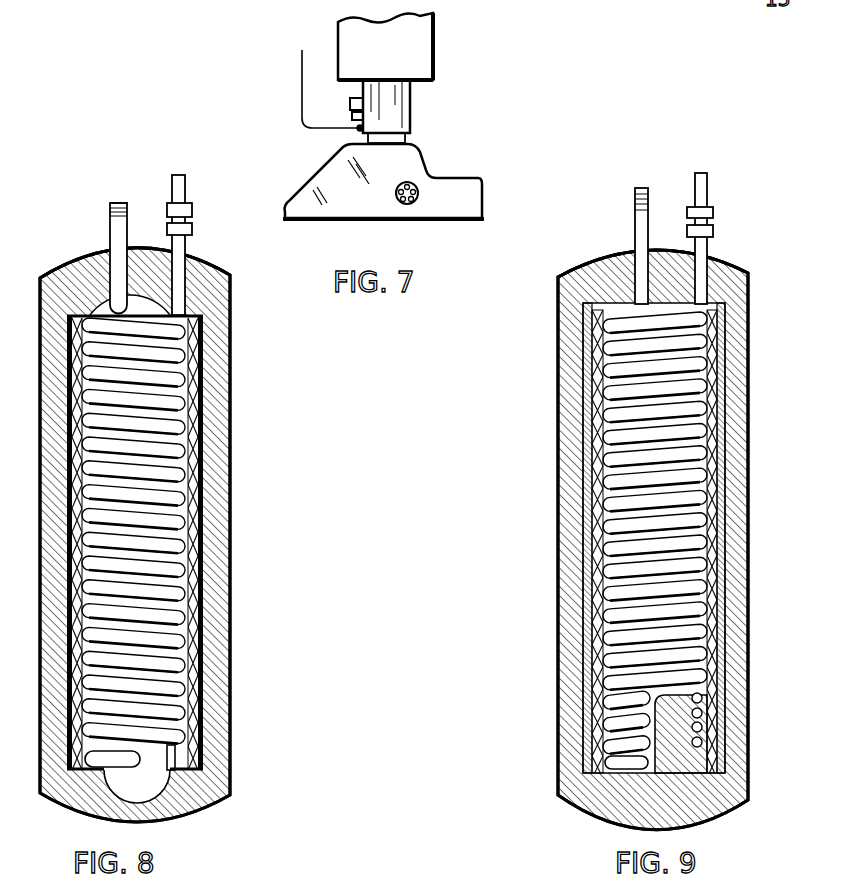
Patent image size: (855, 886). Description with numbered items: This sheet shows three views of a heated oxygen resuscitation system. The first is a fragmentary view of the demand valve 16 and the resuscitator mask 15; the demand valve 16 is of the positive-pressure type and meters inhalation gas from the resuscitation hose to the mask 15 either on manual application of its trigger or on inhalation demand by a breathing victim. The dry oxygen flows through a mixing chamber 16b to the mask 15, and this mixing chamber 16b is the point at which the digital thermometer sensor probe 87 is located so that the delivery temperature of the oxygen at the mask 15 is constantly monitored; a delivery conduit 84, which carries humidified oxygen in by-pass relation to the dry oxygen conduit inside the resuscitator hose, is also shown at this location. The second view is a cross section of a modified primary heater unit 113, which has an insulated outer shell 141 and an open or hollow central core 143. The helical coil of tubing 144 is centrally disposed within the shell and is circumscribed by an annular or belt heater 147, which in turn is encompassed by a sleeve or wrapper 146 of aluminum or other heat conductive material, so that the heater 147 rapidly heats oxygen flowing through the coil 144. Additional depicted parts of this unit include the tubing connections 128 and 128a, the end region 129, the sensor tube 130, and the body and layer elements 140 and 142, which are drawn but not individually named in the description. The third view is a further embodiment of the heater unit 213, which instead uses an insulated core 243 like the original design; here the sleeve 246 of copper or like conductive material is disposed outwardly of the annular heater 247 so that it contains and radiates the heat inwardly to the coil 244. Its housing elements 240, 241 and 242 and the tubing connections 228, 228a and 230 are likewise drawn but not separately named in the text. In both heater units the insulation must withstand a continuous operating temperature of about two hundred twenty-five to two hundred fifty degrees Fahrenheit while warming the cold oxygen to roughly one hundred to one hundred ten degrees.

In FIG. 7, the resuscitator mask 15 is at (455, 170).
In FIG. 7, the demand valve 16 is at (417, 52).
In FIG. 7, the mixing chamber 16b is at (388, 115).
In FIG. 7, the delivery conduit 84 is at (350, 100).
In FIG. 7, the digital thermometer sensor probe 87 is at (302, 116).
In FIG. 8, the primary heater unit 113 is at (238, 472).
In FIG. 8, the heater lead tube 128 is at (185, 177).
In FIG. 8, the nuts 128a is at (192, 232).
In FIG. 8, the end cap 129 is at (180, 262).
In FIG. 8, the thermocouple tube 130 is at (110, 234).
In FIG. 8, the insulating housing 140 is at (238, 683).
In FIG. 8, the insulated outer shell 141 is at (231, 537).
In FIG. 8, the insulating layer 142 is at (215, 579).
In FIG. 8, the open central core 143 is at (153, 768).
In FIG. 8, the helical coil of tubing 144 is at (175, 622).
In FIG. 8, the conductive sleeve or wrapper 146 is at (208, 387).
In FIG. 8, the annular belt heater 147 is at (205, 425).
In FIG. 9, the heater assembly 213 is at (551, 536).
In FIG. 9, the heater lead tube 228 is at (707, 183).
In FIG. 9, the nuts 228a is at (713, 224).
In FIG. 9, the thermocouple tube 230 is at (635, 226).
In FIG. 9, the insulating housing 240 is at (754, 572).
In FIG. 9, the end cap 241 is at (748, 325).
In FIG. 9, the insulating layer 242 is at (735, 401).
In FIG. 9, the insulated core 243 is at (677, 715).
In FIG. 9, the coil 244 is at (697, 372).
In FIG. 9, the conductive sleeve 246 is at (717, 476).
In FIG. 9, the annular heater 247 is at (708, 525).